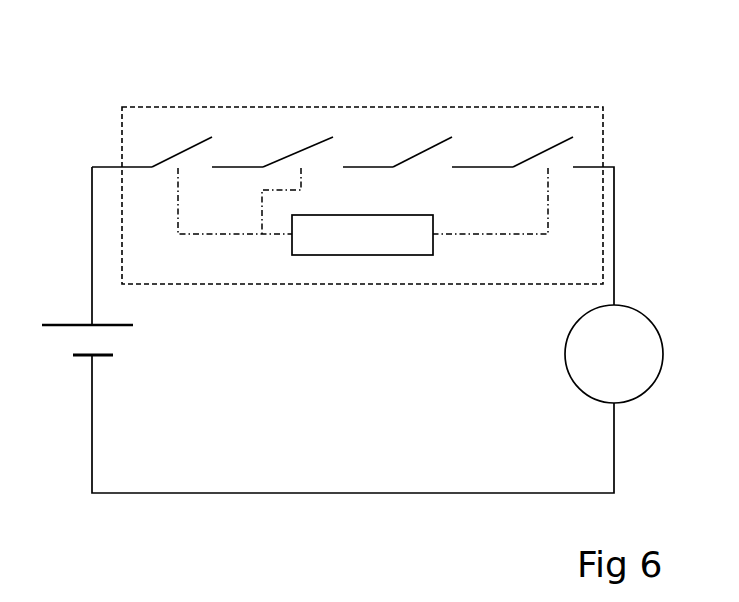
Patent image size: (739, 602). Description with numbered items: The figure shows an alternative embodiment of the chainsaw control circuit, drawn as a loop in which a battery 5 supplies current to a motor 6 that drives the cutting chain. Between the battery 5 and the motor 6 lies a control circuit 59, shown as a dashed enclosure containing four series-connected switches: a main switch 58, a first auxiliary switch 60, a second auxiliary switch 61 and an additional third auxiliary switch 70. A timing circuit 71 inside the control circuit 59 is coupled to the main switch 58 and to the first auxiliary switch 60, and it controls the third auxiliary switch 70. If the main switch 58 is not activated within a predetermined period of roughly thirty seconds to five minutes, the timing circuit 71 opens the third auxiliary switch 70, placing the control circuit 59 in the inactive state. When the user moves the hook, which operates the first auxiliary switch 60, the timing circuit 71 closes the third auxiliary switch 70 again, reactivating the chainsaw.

The battery 5 is at (62, 322).
The motor 6 is at (635, 308).
The main switch 58 is at (168, 118).
The control circuit 59 is at (603, 130).
The first auxiliary switch 60 is at (307, 118).
The second auxiliary switch 61 is at (434, 118).
The third auxiliary switch 70 is at (545, 118).
The timing circuit 71 is at (363, 255).